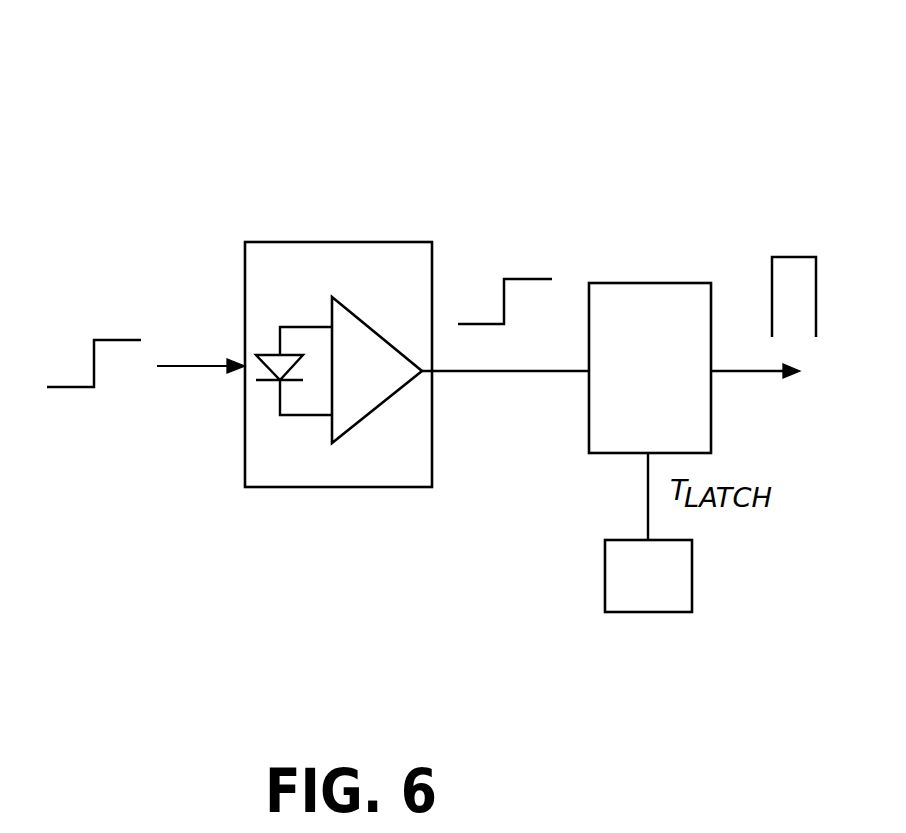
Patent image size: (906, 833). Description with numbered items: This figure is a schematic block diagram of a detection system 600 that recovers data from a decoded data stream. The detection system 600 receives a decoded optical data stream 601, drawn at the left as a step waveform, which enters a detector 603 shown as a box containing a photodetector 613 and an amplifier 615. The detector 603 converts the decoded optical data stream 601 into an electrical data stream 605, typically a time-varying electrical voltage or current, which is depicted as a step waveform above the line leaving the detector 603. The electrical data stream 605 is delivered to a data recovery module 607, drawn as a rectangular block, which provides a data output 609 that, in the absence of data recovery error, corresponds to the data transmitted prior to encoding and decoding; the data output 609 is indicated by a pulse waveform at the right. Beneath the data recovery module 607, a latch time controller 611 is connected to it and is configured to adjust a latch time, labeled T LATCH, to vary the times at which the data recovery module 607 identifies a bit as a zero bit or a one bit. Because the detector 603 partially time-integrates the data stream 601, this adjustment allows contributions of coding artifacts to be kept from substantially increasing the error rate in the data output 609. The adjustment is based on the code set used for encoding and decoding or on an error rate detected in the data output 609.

The detection system 600 is at (503, 90).
The decoded optical data stream 601 is at (107, 340).
The detector 603 is at (288, 242).
The electrical data stream 605 is at (527, 279).
The data recovery module 607 is at (630, 283).
The data output 609 is at (795, 257).
The latch time controller 611 is at (642, 612).
The photodetector 613 is at (264, 386).
The amplifier 615 is at (358, 420).